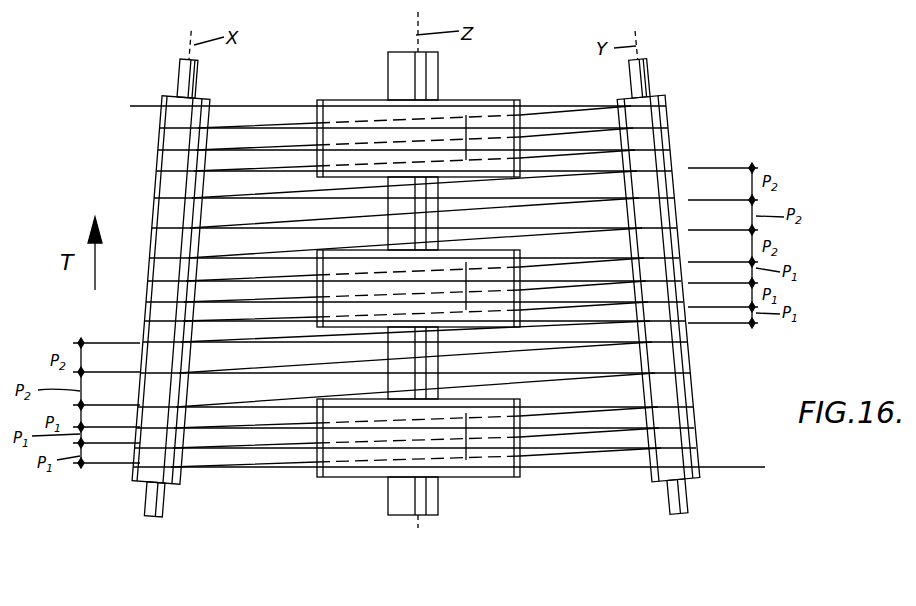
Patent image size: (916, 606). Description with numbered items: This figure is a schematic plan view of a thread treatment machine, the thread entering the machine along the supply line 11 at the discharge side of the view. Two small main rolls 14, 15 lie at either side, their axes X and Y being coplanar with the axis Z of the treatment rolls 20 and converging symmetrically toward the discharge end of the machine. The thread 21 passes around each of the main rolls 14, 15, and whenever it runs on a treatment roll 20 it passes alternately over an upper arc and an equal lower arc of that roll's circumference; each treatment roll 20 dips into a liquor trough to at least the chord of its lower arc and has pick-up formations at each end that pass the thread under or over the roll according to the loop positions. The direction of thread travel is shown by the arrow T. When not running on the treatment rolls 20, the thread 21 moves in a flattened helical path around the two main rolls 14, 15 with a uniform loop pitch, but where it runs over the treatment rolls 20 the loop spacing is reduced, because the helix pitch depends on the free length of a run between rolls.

The wire feed line 11 is at (738, 469).
The main roll 14 is at (170, 118).
The main roll 15 is at (673, 105).
The treatment roll 20 is at (502, 106).
The thread 21 is at (134, 106).